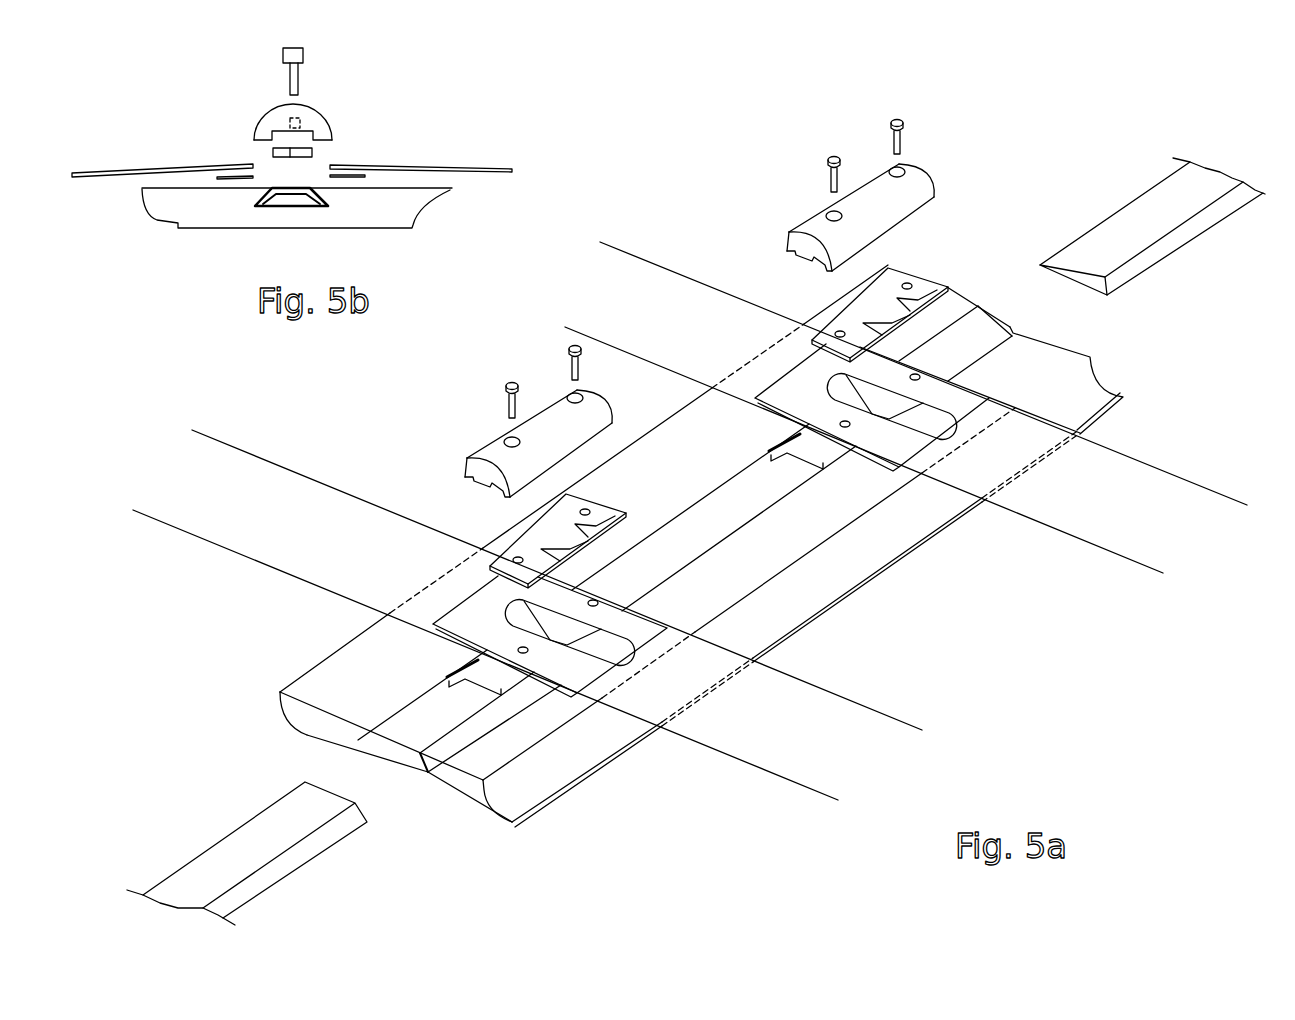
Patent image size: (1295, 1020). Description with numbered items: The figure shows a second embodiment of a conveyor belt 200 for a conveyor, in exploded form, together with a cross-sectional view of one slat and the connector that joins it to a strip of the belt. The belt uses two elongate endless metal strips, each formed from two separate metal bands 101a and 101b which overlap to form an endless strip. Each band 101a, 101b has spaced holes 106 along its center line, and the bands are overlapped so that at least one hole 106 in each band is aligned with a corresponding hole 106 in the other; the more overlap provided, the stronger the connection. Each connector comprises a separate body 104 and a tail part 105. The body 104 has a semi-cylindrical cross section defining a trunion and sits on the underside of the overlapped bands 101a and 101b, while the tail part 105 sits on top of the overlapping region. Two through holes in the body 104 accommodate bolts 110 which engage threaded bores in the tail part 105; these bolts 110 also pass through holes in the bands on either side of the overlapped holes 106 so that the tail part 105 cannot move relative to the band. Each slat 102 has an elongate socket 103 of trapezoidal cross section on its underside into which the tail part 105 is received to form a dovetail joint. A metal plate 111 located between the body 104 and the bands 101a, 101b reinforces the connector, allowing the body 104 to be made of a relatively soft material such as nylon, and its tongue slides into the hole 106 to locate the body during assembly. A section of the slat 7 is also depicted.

In FIG. 5A, the rail bar 7 is at (1142, 207).
In FIG. 5A, the metal band 101a is at (1133, 520).
In FIG. 5A, the metal band 101b is at (645, 272).
In FIG. 5A, the slat 102 is at (605, 758).
In FIG. 5A, the elongate socket 103 is at (1013, 325).
In FIG. 5A, the body part 104 is at (473, 462).
In FIG. 5B, the body part 104 is at (317, 125).
In FIG. 5A, the tail part 105 is at (480, 657).
In FIG. 5B, the tail part 105 is at (253, 203).
In FIG. 5A, the hole 106 is at (548, 645).
In FIG. 5A, the bolt 110 is at (966, 117).
In FIG. 5A, the plate 111 is at (520, 545).
In FIG. 5B, the plate 111 is at (310, 153).
In FIG. 5A, the conveyor belt 200 is at (978, 651).